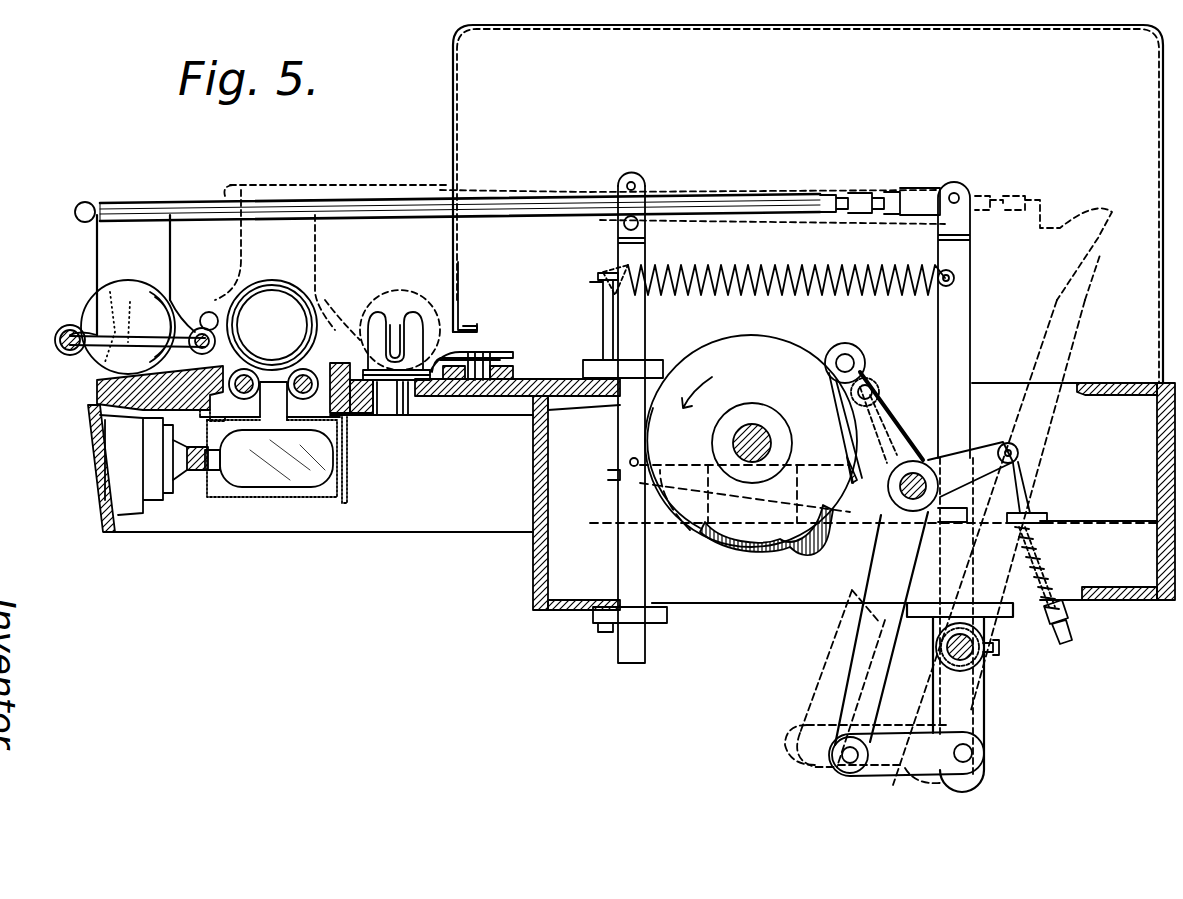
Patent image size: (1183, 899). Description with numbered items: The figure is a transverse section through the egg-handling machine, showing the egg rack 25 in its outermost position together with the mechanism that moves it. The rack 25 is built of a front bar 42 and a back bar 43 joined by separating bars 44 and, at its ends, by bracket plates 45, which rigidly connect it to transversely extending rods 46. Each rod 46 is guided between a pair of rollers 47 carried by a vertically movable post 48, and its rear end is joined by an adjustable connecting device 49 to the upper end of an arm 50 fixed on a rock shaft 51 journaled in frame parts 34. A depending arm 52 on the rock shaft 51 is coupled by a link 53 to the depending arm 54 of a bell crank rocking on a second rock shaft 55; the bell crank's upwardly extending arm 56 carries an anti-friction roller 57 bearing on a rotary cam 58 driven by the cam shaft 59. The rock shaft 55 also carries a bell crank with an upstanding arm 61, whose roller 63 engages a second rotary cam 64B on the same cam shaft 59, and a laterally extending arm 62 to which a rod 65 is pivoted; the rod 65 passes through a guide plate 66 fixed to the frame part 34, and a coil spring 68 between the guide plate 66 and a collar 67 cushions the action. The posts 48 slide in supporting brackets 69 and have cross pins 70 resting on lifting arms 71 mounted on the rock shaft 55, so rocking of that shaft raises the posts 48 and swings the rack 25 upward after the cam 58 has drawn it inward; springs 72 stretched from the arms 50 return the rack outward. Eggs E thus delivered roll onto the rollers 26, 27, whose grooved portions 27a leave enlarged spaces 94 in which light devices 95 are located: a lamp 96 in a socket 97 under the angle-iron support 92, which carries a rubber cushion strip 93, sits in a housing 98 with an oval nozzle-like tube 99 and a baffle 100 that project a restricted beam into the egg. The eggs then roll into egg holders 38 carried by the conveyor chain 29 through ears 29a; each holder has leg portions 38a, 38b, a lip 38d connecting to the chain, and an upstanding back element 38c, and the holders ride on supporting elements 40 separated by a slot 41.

The egg rack 25 is at (47, 344).
The roller 26 is at (245, 368).
The roller 27 is at (300, 368).
The grooved portion of roller 27a is at (338, 372).
The conveyor chain 29 is at (482, 362).
The ears 29a is at (495, 397).
The frame parts 34 is at (530, 568).
The egg holder 38 is at (440, 352).
The leg portion of egg holder 38a is at (375, 340).
The leg portion of egg holder 38b is at (432, 305).
The upstanding back element 38c is at (400, 334).
The lip or extension 38d is at (500, 355).
The supporting elements 40 is at (385, 390).
The slot 41 is at (397, 390).
The front bar 42 is at (72, 332).
The back bar 43 is at (195, 325).
The separating bars 44 is at (144, 300).
The bracket plates 45 is at (97, 242).
The transversely extending rods 46 is at (160, 203).
The rollers 47 is at (650, 205).
The posts 48 is at (640, 328).
The adjustable connecting devices 49 is at (858, 188).
The arms 50 is at (972, 330).
The rock shaft 51 is at (975, 660).
The depending arm 52 is at (985, 720).
The link 53 is at (880, 773).
The depending arm of bell crank 54 is at (900, 580).
The rock shaft 55 is at (912, 462).
The upwardly extending arm 56 is at (855, 440).
The anti-friction roller 57 is at (855, 348).
The rotary cam 58 is at (745, 548).
The cam shaft 59 is at (755, 405).
The upstanding arm 61 is at (846, 415).
The laterally extending arm 62 is at (990, 445).
The anti-friction roller 63 is at (875, 392).
The rotary cam 64B is at (782, 548).
The rod 65 is at (1020, 485).
The guide plate 66 is at (1040, 512).
The collar 67 is at (1068, 622).
The coil spring 68 is at (1040, 545).
The supporting brackets 69 is at (650, 363).
The cross pins 70 is at (628, 462).
The lifting arms 71 is at (693, 415).
The springs 72 is at (888, 272).
The support 92 is at (90, 428).
The cushion strip 93 is at (95, 380).
The enlarged spaces 94 is at (278, 262).
The light devices 95 is at (232, 512).
The electric lamp 96 is at (330, 474).
The socket 97 is at (198, 472).
The lamp housing 98 is at (285, 492).
The nozzle-like tube element 99 is at (270, 395).
The baffle 100 is at (350, 497).